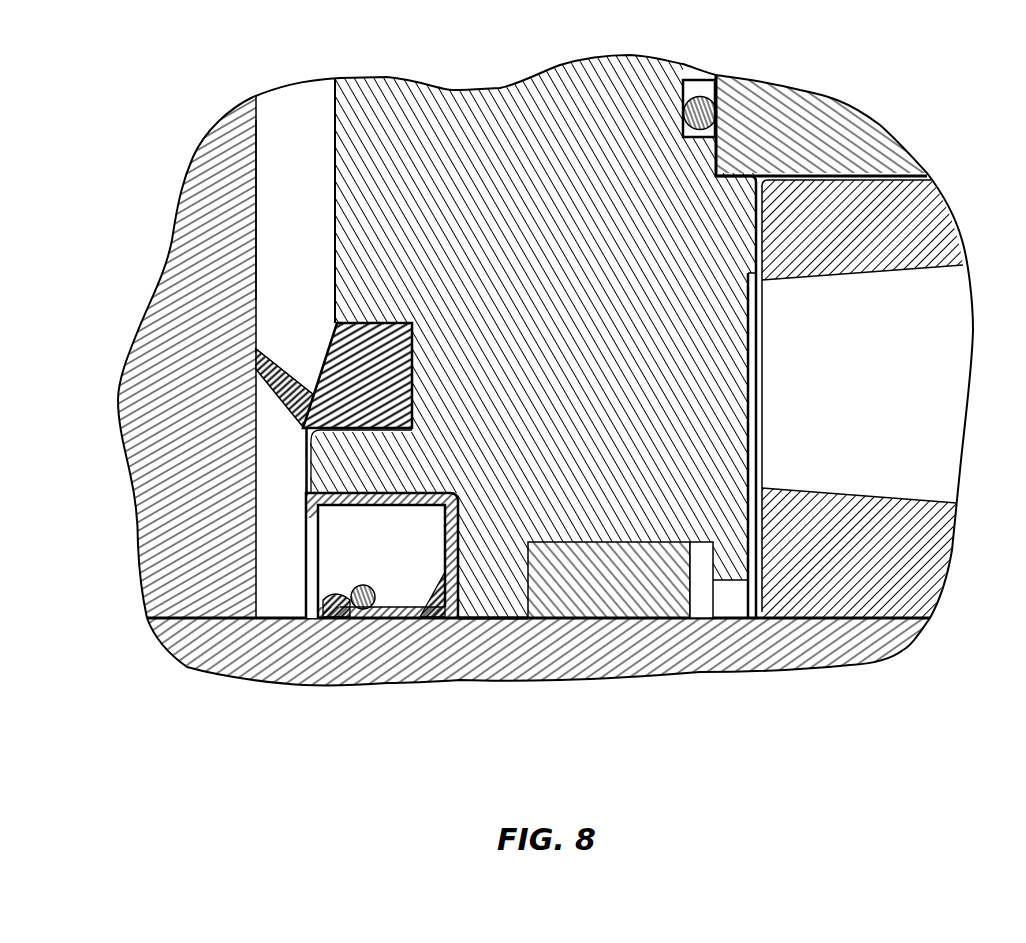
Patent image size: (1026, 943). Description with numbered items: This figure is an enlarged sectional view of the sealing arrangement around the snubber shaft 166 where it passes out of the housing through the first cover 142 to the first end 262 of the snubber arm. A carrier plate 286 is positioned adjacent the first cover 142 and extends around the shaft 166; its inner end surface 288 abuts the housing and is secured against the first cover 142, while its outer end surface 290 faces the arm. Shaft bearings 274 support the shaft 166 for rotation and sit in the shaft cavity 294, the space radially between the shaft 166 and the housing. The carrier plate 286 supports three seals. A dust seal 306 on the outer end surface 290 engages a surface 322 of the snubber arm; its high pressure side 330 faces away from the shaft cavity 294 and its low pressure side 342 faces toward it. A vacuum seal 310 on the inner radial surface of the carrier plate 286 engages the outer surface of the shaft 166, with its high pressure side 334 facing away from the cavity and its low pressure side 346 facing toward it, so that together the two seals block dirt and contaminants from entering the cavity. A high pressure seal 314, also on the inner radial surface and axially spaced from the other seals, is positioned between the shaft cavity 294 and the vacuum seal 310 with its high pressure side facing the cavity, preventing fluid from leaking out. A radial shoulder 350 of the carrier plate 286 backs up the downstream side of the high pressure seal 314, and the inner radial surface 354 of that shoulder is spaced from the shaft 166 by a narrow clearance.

The first cover 142 is at (823, 132).
The shaft 166 is at (233, 645).
The first end of the snubber arm 262 is at (187, 497).
The shaft bearings 274 is at (916, 257).
The carrier plate 286 is at (428, 133).
The inner end surface 288 is at (722, 147).
The outer end surface 290 is at (335, 148).
The shaft cavity 294 is at (748, 593).
The dust seal 306 is at (388, 375).
The vacuum seal 310 is at (460, 522).
The high pressure seal 314 is at (630, 597).
The surface of the snubber arm 322 is at (265, 200).
The high pressure side of the dust seal 330 is at (270, 368).
The high pressure side of the vacuum seal 334 is at (322, 597).
The low pressure side of the dust seal 342 is at (283, 400).
The low pressure side of the vacuum seal 346 is at (446, 617).
The radial shoulder 350 is at (485, 587).
The inner radial surface of the radial shoulder 354 is at (498, 618).